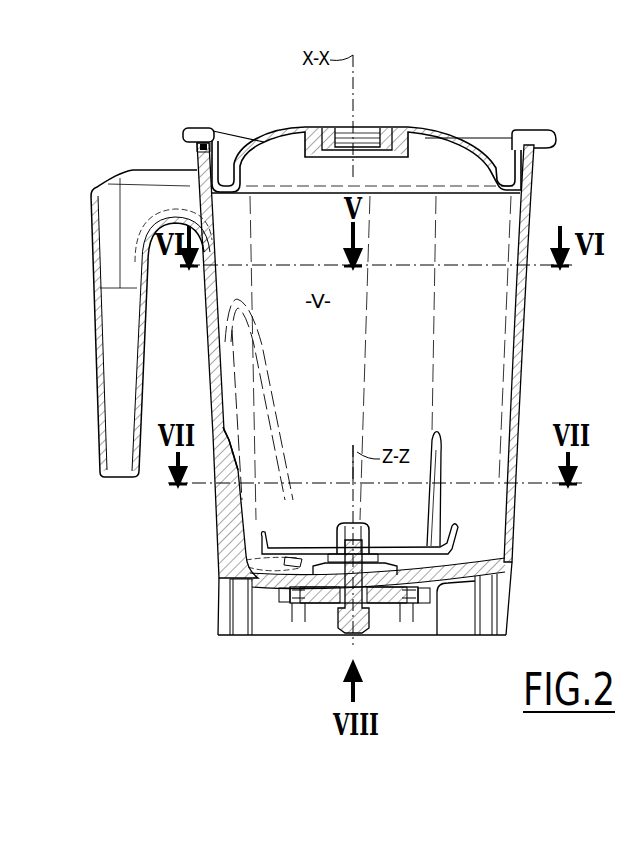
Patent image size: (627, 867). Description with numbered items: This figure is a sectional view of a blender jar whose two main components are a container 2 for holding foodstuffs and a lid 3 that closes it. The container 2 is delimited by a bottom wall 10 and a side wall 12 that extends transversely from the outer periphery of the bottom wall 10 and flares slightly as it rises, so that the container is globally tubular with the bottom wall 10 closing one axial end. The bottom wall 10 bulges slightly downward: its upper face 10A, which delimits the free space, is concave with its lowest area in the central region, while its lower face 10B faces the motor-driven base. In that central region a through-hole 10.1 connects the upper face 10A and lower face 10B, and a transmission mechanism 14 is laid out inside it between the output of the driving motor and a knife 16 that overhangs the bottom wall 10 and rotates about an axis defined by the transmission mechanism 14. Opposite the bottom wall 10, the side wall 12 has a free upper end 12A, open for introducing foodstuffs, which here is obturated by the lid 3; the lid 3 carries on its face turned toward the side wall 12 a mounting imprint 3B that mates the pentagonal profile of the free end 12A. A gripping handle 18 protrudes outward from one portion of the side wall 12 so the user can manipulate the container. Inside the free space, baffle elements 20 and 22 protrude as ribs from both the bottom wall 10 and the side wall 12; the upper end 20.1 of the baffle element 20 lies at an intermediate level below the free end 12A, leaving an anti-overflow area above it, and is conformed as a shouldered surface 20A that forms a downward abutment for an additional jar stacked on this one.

The container 2 is at (403, 380).
The lid 3 is at (370, 126).
The mounting imprint 3B is at (196, 188).
The side wall 12 is at (521, 332).
The free upper end 12A is at (534, 132).
The gripping handle 18 is at (92, 238).
The baffle element 20 is at (239, 514).
The shouldered surface 20A is at (228, 430).
The upper end 20.1 is at (226, 438).
The baffle element 22 is at (424, 468).
The knife 16 is at (398, 527).
The transmission mechanism 14 is at (350, 597).
The bottom wall 10 is at (395, 604).
The upper face 10A is at (455, 564).
The lower face 10B is at (449, 594).
The through-hole 10.1 is at (382, 608).